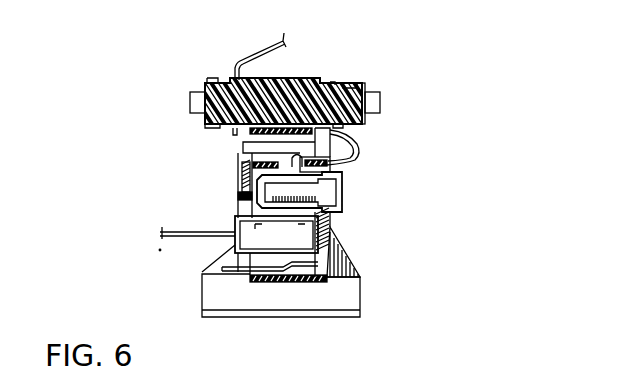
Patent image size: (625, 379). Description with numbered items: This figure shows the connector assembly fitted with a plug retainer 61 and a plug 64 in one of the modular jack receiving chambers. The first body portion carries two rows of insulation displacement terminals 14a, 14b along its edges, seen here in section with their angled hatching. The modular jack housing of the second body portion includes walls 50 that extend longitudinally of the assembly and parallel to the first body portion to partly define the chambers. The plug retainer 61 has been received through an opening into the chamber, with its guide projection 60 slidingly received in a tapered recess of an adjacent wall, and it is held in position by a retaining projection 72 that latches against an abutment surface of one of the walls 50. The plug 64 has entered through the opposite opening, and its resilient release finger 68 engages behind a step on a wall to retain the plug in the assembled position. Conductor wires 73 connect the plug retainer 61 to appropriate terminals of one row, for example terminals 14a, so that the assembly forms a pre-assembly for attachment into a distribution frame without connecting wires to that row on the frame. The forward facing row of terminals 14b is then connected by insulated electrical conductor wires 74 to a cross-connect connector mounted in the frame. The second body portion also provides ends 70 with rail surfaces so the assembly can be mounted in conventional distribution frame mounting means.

The terminals 14a is at (353, 85).
The terminals 14b is at (197, 97).
The insulated electrical conductor wires 74 is at (247, 61).
The conductor wires 73 is at (357, 145).
The walls 50 is at (360, 160).
The retaining projection 72 is at (243, 151).
The plug retainer 61 is at (344, 196).
The guide projection 60 is at (313, 189).
The plug 64 is at (287, 245).
The resilient release finger 68 is at (227, 277).
The ends 70 is at (211, 304).